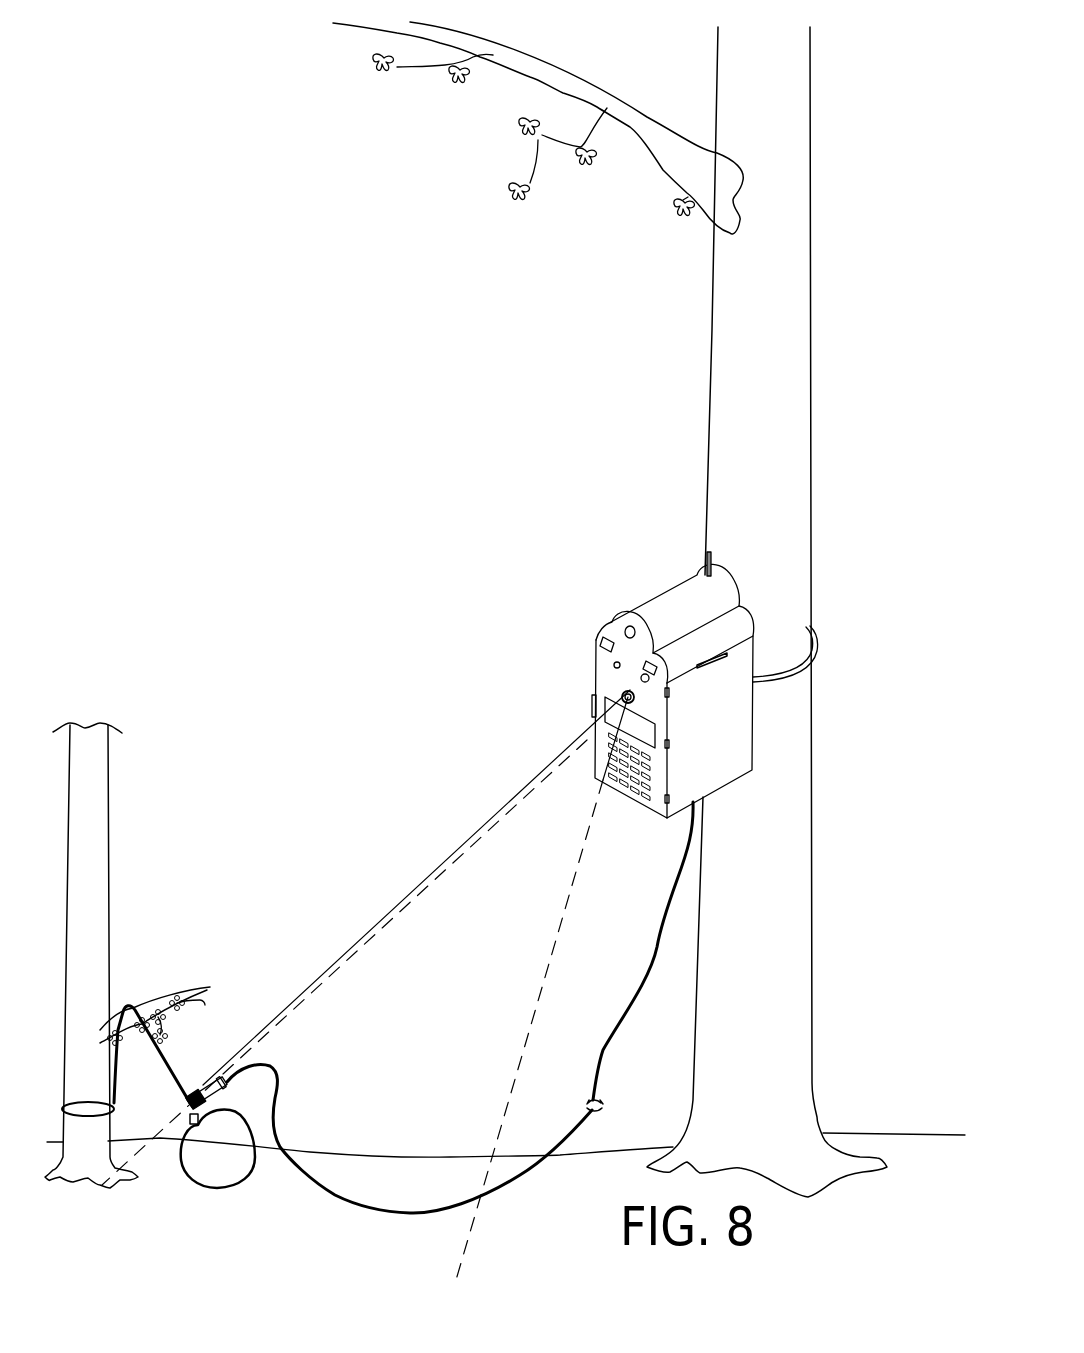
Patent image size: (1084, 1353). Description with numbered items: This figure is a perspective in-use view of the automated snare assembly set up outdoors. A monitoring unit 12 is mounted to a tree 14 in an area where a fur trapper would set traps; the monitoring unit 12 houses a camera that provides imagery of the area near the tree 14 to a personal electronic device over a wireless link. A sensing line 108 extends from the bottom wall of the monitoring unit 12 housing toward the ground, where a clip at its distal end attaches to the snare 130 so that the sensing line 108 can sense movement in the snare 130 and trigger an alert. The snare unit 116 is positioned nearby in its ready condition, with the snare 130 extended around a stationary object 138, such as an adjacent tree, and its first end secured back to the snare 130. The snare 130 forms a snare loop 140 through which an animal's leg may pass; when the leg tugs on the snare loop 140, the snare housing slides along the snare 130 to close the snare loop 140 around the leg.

The monitoring unit 12 is at (609, 566).
The tree 14 is at (712, 356).
The sensing line 108 is at (661, 930).
The snare unit 116 is at (205, 1048).
The snare 130 is at (220, 1190).
The stationary object 138 is at (108, 755).
The snare loop 140 is at (255, 1182).